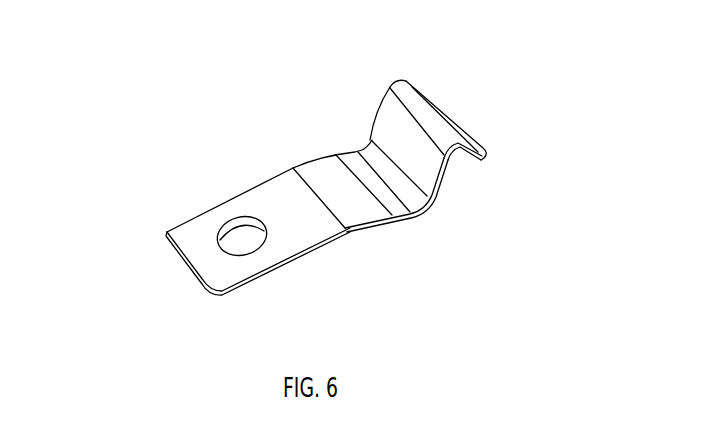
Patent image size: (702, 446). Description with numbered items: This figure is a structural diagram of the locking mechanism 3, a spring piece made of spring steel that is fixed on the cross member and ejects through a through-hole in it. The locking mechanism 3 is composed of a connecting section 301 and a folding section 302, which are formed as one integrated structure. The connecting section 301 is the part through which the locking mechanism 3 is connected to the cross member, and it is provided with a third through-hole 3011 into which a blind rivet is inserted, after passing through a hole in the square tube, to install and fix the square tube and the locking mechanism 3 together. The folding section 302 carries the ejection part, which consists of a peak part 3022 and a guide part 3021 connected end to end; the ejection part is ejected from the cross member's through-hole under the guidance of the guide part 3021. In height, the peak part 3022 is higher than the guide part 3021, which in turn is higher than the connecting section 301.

The locking mechanism 3 is at (310, 161).
The connecting section 301 is at (192, 194).
The third through-hole 3011 is at (235, 243).
The folding section 302 is at (369, 212).
The guide part 3021 is at (462, 126).
The peak part 3022 is at (400, 90).